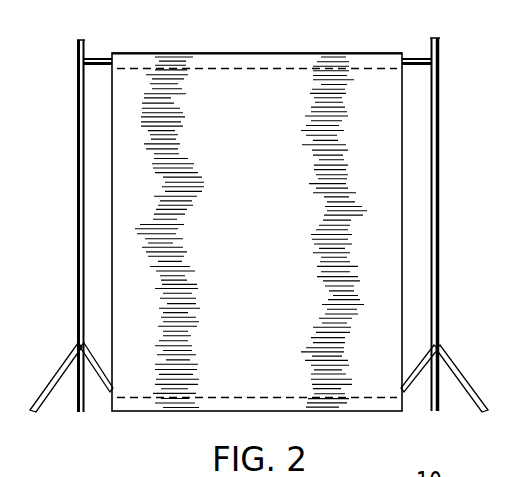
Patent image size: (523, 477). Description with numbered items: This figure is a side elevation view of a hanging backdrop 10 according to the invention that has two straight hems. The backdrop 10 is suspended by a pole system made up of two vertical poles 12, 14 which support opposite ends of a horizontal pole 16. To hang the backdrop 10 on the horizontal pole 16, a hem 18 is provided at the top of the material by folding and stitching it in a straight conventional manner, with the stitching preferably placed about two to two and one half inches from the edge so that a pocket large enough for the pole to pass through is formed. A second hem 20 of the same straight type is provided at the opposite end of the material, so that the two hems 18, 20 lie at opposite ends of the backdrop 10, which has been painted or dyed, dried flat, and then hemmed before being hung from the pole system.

The backdrop 10 is at (251, 260).
The vertical pole 12 is at (78, 147).
The vertical pole 14 is at (440, 201).
The horizontal pole 16 is at (95, 60).
The hem 18 is at (212, 69).
The hem 20 is at (233, 397).